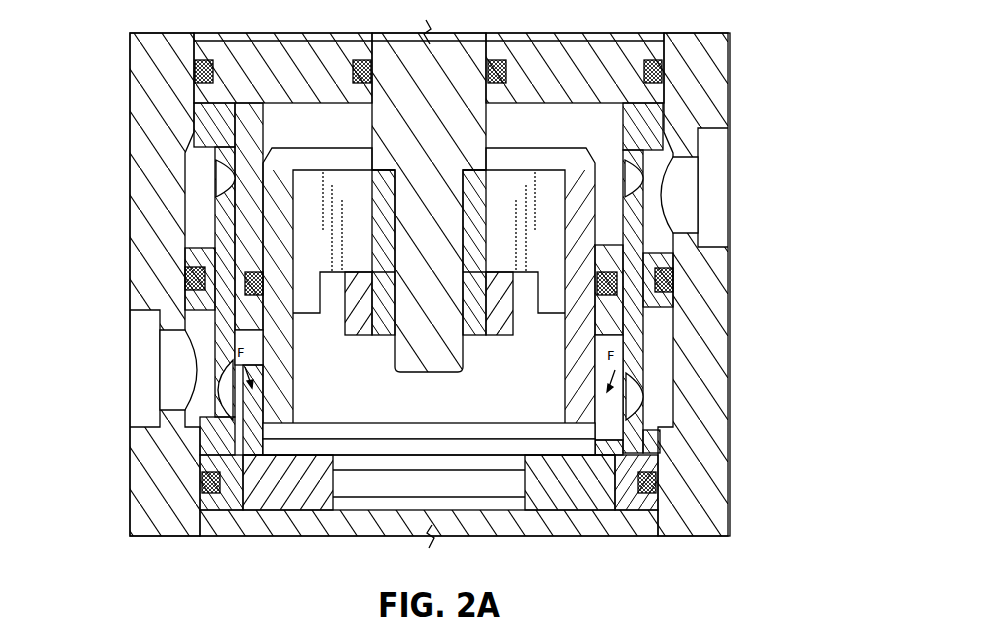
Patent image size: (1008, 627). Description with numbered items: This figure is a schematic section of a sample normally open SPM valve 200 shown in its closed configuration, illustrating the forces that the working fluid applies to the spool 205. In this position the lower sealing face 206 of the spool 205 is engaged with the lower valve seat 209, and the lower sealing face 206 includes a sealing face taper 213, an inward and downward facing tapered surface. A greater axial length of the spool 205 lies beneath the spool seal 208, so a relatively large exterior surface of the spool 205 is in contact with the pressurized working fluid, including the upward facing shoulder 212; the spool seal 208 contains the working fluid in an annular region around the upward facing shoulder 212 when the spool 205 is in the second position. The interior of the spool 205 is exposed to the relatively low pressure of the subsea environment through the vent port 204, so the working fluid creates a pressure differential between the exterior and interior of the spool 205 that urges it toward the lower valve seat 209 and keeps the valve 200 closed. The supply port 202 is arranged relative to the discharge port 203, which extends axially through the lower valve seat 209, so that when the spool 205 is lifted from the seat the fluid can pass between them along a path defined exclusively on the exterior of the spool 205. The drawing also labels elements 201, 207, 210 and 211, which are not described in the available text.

The SPM valve 200 is at (806, 49).
The housing 201 is at (145, 183).
The supply port 202 is at (170, 372).
The discharge port 203 is at (490, 525).
The vent port 204 is at (713, 192).
The spool 205 is at (675, 263).
The lower sealing face 206 is at (245, 503).
The top cover 207 is at (700, 60).
The spool seal 208 is at (185, 287).
The lower valve seat 209 is at (598, 490).
The central shaft 210 is at (427, 137).
The lens holder bracket 211 is at (353, 185).
The upward facing shoulder 212 is at (612, 394).
The sealing face taper 213 is at (262, 510).